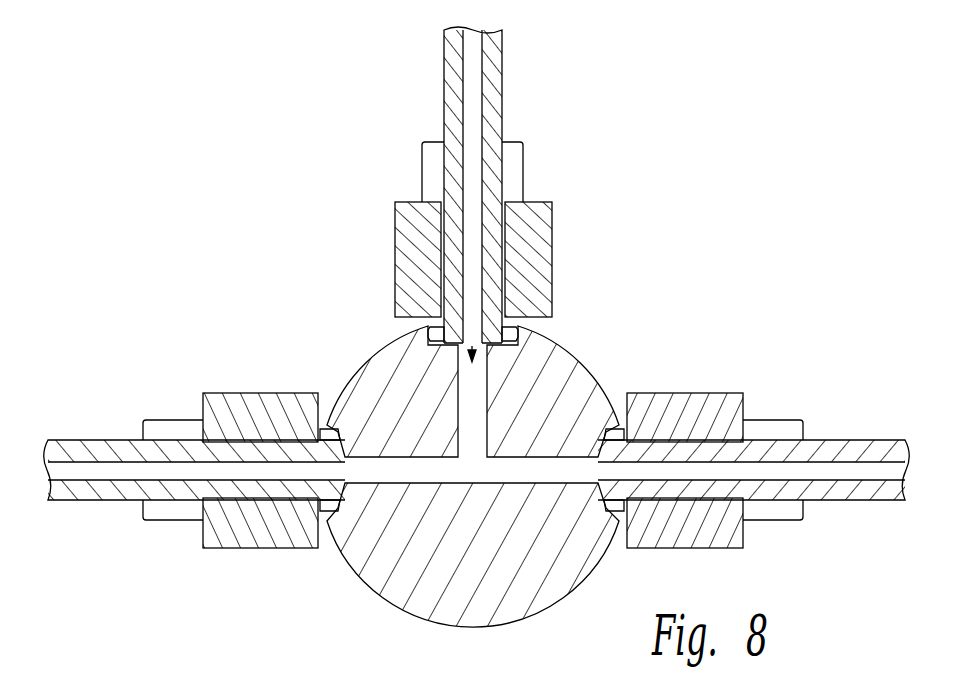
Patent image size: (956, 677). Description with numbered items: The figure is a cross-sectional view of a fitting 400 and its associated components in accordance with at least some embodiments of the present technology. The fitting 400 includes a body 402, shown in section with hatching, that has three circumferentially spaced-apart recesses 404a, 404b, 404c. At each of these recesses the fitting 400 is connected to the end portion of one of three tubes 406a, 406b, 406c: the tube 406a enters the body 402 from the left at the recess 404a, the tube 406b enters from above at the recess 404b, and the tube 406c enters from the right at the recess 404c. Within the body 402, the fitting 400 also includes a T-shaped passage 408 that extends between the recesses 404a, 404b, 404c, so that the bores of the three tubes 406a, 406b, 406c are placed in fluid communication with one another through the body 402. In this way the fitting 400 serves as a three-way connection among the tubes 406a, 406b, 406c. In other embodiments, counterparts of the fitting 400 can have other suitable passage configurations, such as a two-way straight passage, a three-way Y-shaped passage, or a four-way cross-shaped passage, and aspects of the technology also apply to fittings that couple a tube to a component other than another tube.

The fitting 400 is at (727, 236).
The body 402 is at (563, 380).
The recess 404a is at (323, 430).
The recess 404b is at (512, 326).
The recess 404c is at (620, 430).
The tube 406a is at (107, 448).
The tube 406b is at (493, 102).
The tube 406c is at (848, 444).
The T-shaped passage 408 is at (472, 345).